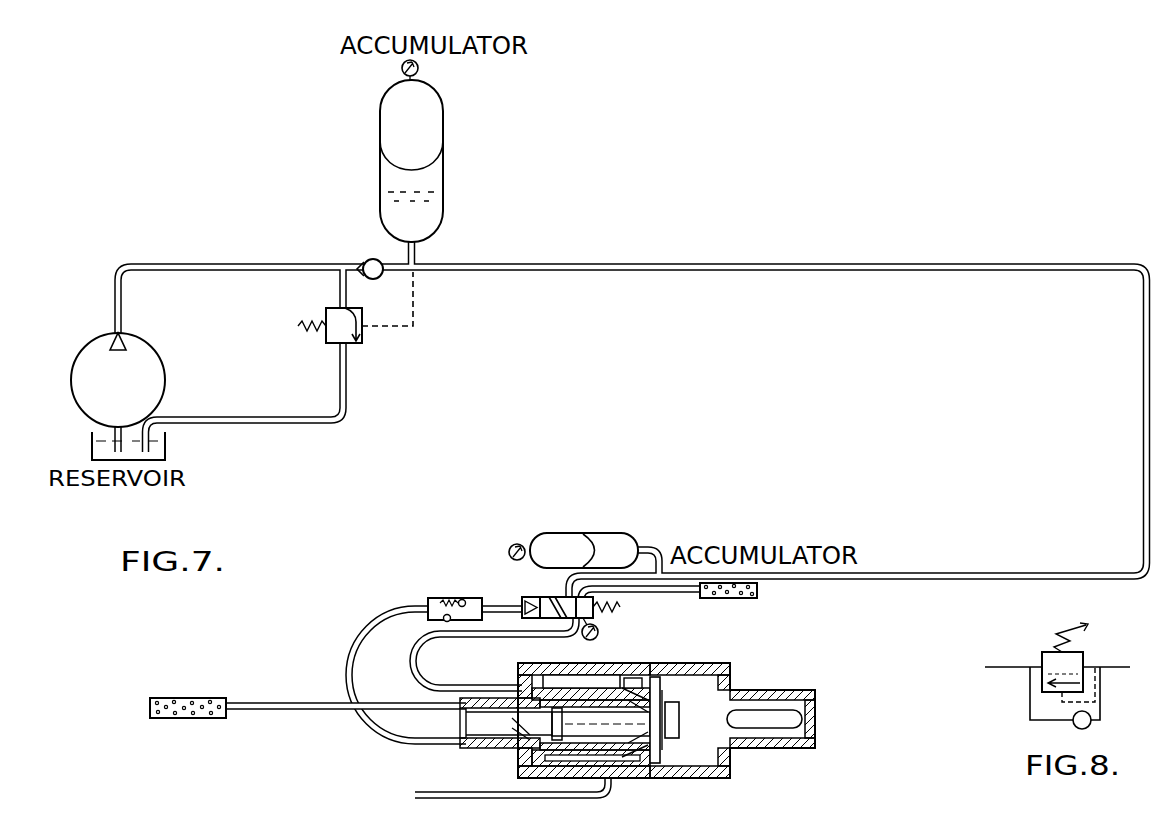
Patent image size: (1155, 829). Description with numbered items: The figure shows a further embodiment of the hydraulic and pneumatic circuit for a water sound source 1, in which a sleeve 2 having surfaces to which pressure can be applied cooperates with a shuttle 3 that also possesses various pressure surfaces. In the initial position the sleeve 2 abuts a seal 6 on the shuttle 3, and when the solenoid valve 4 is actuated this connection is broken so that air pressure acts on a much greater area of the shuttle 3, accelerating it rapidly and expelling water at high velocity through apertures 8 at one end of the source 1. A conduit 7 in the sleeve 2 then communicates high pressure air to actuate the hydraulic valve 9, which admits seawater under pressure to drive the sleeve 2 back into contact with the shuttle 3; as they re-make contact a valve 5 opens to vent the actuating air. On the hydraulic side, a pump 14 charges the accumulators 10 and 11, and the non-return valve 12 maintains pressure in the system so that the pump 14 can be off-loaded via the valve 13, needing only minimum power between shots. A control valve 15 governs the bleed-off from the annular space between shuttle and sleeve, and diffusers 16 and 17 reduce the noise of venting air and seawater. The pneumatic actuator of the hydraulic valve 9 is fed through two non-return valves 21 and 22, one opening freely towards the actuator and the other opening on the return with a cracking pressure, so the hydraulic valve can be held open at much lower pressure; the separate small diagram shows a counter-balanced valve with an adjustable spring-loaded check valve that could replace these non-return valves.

The water sound source 1 is at (722, 667).
The sleeve 2 is at (538, 672).
The shuttle 3 is at (670, 676).
The solenoid valve 4 is at (512, 722).
The valve 5 is at (632, 684).
The seal 6 is at (658, 733).
The conduit 7 is at (612, 770).
The apertures 8 is at (768, 730).
The hydraulic valve 9 is at (545, 600).
The accumulator 10 is at (610, 540).
The accumulator 11 is at (432, 195).
The non-return valve 12 is at (366, 261).
The valve 13 is at (366, 339).
The pump 14 is at (152, 345).
The control valve 15 is at (306, 704).
The diffuser 16 is at (196, 698).
The diffuser 17 is at (748, 596).
The non-return valve 21 is at (457, 601).
The non-return valve 22 is at (444, 621).